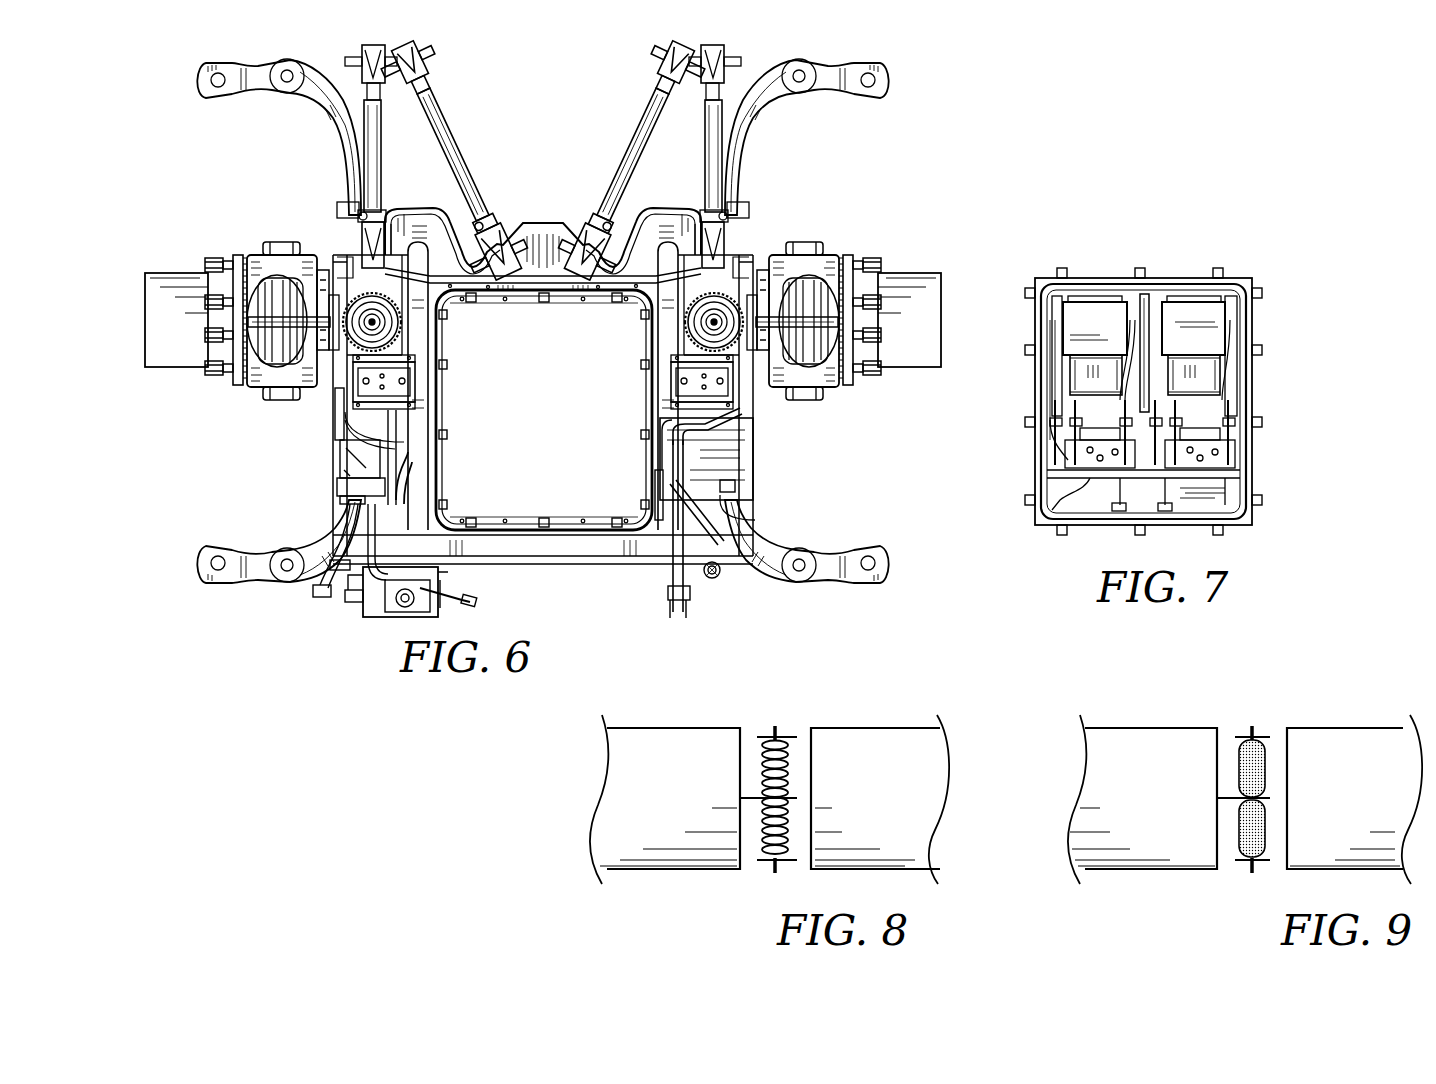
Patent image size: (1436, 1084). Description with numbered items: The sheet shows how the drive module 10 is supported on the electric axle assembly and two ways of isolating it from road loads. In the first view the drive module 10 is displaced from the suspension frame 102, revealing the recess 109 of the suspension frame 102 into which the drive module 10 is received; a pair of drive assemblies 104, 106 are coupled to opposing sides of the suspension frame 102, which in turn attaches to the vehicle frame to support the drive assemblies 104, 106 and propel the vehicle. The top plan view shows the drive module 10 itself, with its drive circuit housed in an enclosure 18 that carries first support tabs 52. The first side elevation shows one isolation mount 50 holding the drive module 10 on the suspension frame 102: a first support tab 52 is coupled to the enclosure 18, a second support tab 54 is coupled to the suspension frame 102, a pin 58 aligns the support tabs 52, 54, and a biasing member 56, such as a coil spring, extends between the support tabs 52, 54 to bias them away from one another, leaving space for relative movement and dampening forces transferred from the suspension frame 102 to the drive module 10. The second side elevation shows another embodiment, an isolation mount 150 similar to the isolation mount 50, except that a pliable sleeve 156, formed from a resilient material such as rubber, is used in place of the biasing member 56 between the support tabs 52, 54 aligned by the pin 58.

In FIG. 7, the drive module 10 is at (1238, 216).
In FIG. 7, the enclosure 18 is at (1252, 326).
In FIG. 8, the enclosure 18 is at (640, 760).
In FIG. 9, the enclosure 18 is at (1115, 760).
In FIG. 8, the isolation mount 50 is at (767, 710).
In FIG. 7, the first support tab 52 is at (1218, 264).
In FIG. 8, the first support tab 52 is at (724, 796).
In FIG. 9, the first support tab 52 is at (1203, 796).
In FIG. 6, the second support tab 54 is at (641, 316).
In FIG. 8, the second support tab 54 is at (821, 860).
In FIG. 9, the second support tab 54 is at (1298, 860).
In FIG. 8, the biasing member 56 is at (750, 826).
In FIG. 8, the pin 58 is at (784, 727).
In FIG. 9, the pin 58 is at (1257, 727).
In FIG. 6, the suspension frame 102 is at (545, 214).
In FIG. 8, the suspension frame 102 is at (893, 755).
In FIG. 6, the drive assembly 104 is at (282, 232).
In FIG. 6, the drive assembly 106 is at (808, 232).
In FIG. 6, the recess 109 is at (566, 437).
In FIG. 9, the isolation mount 150 is at (1243, 710).
In FIG. 9, the pliable sleeve 156 is at (1228, 826).